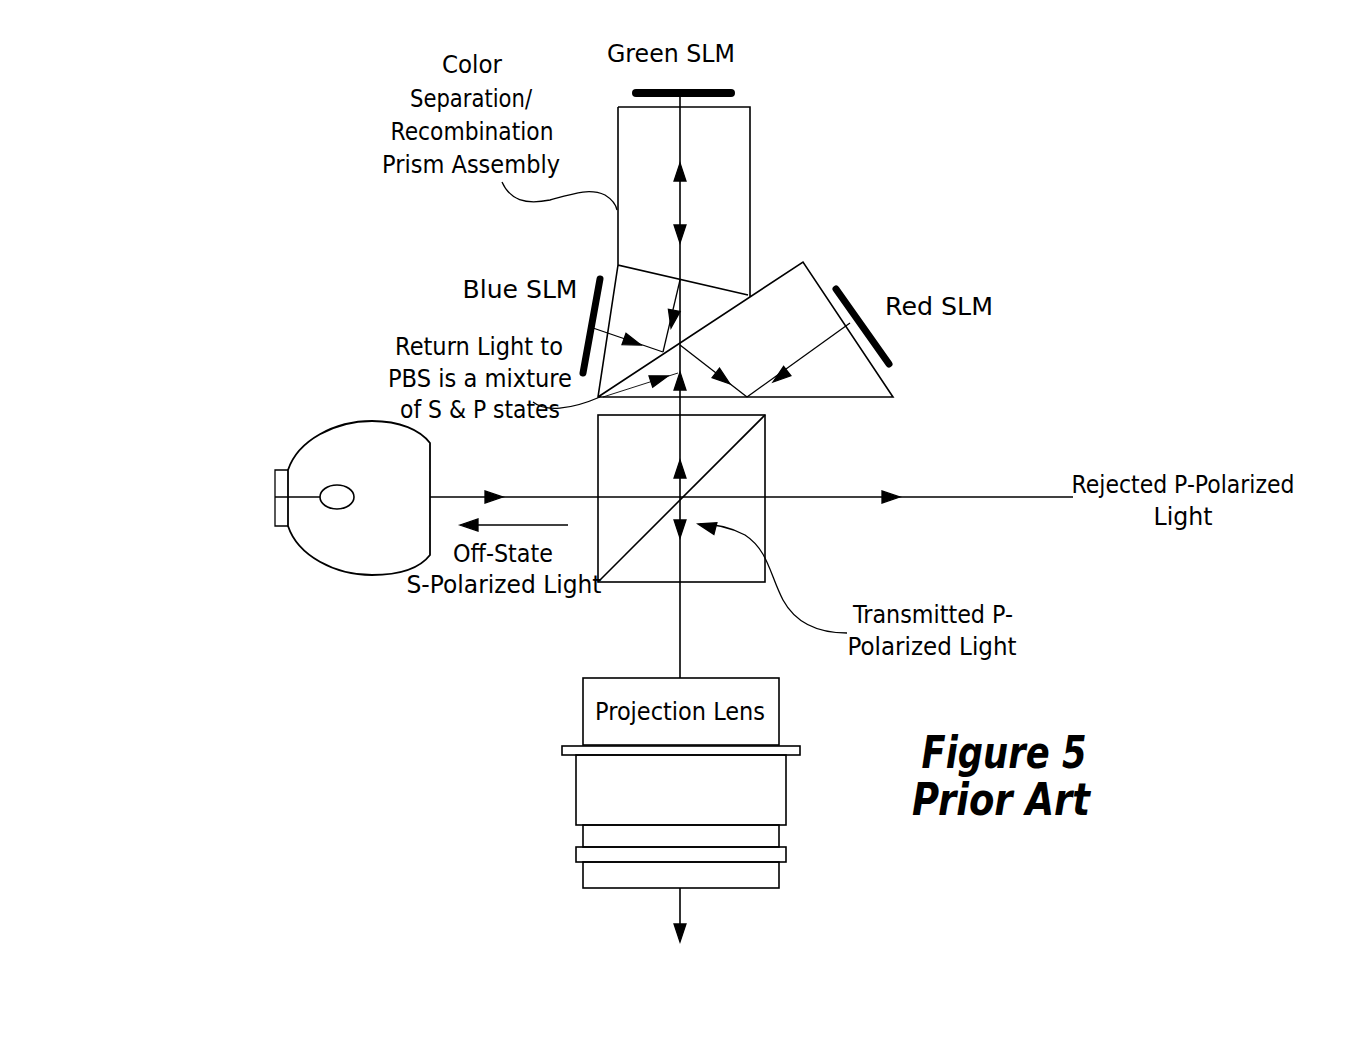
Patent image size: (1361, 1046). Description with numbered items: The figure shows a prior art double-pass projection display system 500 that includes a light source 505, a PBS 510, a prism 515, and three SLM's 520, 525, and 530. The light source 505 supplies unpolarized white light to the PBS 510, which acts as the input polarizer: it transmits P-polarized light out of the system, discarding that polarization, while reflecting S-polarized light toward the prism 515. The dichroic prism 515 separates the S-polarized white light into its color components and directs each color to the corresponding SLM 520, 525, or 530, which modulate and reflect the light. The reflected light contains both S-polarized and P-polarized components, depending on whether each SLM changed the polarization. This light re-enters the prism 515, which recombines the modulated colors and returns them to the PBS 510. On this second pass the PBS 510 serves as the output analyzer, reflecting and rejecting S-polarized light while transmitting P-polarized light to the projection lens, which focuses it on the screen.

The double-pass projection display system 500 is at (1030, 130).
The light source 505 is at (285, 535).
The PBS 510 is at (765, 456).
The prism 515 is at (750, 205).
The SLM 520 is at (722, 92).
The SLM 525 is at (588, 318).
The SLM 530 is at (840, 280).